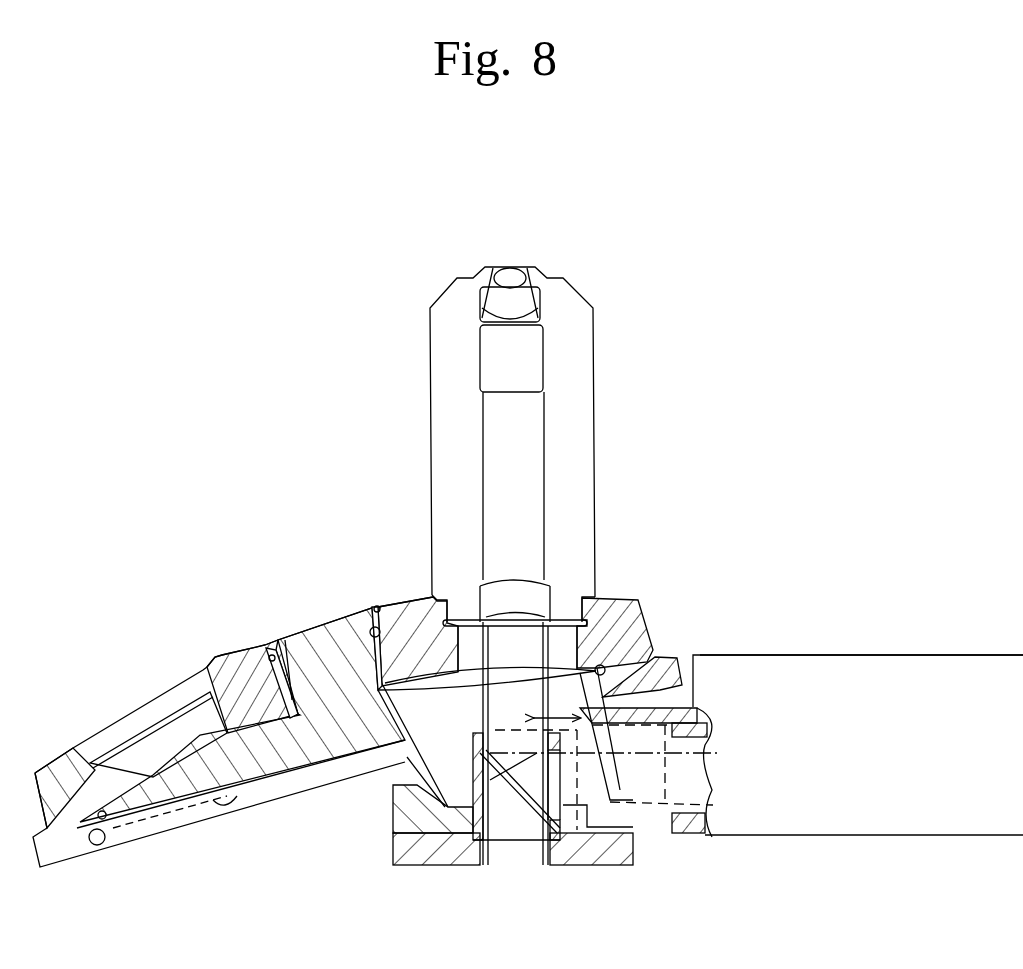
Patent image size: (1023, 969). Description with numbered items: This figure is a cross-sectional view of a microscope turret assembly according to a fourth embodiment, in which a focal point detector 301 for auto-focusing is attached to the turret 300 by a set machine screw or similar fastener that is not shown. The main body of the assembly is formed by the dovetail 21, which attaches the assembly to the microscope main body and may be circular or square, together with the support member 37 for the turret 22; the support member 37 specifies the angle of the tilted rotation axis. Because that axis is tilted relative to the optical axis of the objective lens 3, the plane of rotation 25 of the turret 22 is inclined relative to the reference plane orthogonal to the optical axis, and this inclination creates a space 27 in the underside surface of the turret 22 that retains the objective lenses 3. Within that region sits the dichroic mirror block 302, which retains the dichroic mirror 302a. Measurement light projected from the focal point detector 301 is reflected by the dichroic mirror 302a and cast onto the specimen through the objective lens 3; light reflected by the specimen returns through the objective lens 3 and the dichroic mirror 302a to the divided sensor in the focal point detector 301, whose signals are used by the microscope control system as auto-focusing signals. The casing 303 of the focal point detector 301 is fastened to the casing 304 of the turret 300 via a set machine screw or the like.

The objective lens 3 is at (583, 438).
The dovetail 21 is at (402, 870).
The turret 22 is at (625, 598).
The plane of rotation 25 is at (220, 818).
The space 27 is at (327, 838).
The support member 37 is at (277, 737).
The turret 300 is at (755, 582).
The focal point detector 301 is at (928, 670).
The dichroic mirror block 302 is at (503, 840).
The dichroic mirror 302a is at (523, 837).
The casing 303 is at (806, 650).
The casing 304 is at (683, 707).